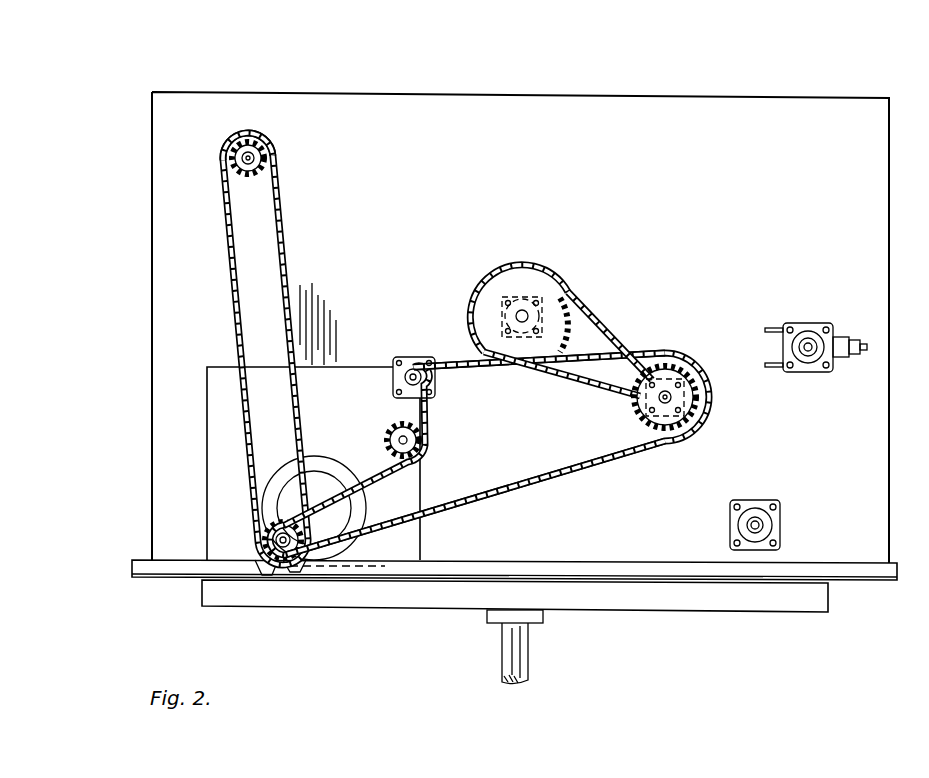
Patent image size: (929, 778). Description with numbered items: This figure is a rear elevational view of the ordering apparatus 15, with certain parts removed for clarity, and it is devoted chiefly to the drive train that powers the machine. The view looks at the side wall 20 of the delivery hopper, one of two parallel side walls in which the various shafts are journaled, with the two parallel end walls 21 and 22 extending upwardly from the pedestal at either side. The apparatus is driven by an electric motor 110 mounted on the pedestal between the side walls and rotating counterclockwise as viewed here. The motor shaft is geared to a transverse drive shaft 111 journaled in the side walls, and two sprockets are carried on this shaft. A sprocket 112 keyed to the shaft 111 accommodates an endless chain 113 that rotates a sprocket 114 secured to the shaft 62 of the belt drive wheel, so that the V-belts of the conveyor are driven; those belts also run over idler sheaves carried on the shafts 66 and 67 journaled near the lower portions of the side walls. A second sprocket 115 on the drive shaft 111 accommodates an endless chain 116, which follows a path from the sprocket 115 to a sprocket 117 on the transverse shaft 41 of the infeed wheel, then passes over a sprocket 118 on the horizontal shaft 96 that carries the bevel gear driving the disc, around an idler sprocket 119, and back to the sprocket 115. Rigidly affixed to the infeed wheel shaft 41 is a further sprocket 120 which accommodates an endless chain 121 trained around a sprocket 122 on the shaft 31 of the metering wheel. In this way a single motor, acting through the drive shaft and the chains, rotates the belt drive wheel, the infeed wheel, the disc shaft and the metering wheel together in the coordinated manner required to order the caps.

The ordering apparatus 15 is at (112, 100).
The side wall 20 is at (620, 99).
The end wall 21 is at (889, 160).
The end wall 22 is at (152, 193).
The shaft 31 is at (522, 316).
The transverse shaft 41 is at (668, 397).
The shaft 62 is at (250, 131).
The shaft 66 is at (808, 340).
The shaft 67 is at (758, 525).
The horizontal shaft 96 is at (413, 368).
The electric motor 110 is at (398, 560).
The transverse drive shaft 111 is at (268, 562).
The sprocket 112 is at (265, 520).
The endless chain 113 is at (236, 320).
The sprocket 114 is at (258, 157).
The sprocket 115 is at (292, 562).
The endless chain 116 is at (468, 500).
The sprocket 117 is at (665, 440).
The sprocket 118 is at (425, 383).
The idler sprocket 119 is at (390, 430).
The sprocket 120 is at (630, 402).
The endless chain 121 is at (610, 320).
The sprocket 122 is at (528, 268).